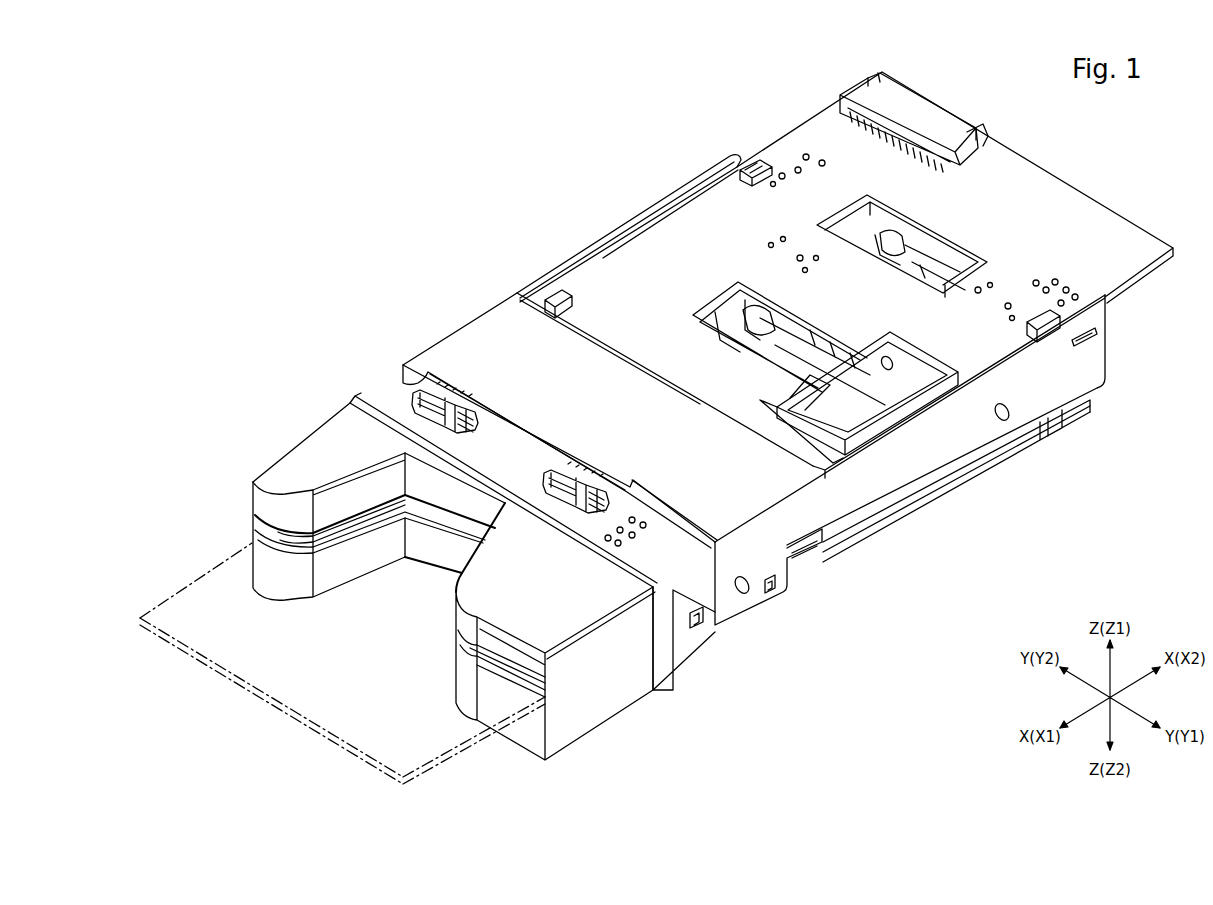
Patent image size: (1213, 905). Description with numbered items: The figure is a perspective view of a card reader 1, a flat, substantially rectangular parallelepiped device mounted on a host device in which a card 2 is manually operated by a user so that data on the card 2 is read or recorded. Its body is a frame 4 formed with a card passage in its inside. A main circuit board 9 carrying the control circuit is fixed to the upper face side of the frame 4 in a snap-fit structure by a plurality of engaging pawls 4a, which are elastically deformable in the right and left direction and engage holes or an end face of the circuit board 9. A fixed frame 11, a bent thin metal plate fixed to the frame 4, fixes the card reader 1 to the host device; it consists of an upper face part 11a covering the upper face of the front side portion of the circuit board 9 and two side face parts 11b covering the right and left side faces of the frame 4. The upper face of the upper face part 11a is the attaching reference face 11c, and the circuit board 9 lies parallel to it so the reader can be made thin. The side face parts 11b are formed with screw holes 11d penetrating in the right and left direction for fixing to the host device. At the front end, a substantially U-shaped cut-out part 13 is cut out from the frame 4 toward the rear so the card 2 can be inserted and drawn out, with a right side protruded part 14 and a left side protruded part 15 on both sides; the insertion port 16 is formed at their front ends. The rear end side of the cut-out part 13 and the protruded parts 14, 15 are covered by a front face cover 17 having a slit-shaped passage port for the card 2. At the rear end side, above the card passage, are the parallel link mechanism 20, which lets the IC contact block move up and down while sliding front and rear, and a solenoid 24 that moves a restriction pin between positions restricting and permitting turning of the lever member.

The card reader 1 is at (390, 208).
The card 2 is at (178, 585).
The frame 4 is at (912, 513).
The engaging pawls 4a is at (763, 160).
The circuit board 9 is at (803, 122).
The fixed frame 11 is at (477, 323).
The upper face part 11a is at (641, 362).
The side face parts 11b is at (643, 216).
The attaching reference face 11c is at (588, 425).
The screw holes 11d is at (743, 596).
The cut-out part 13 is at (422, 578).
The right side protruded part 14 is at (460, 642).
The left side protruded part 15 is at (287, 540).
The insertion port 16 is at (252, 548).
The front face cover 17 is at (308, 438).
The parallel link mechanism 20 is at (730, 320).
The solenoid 24 is at (910, 370).